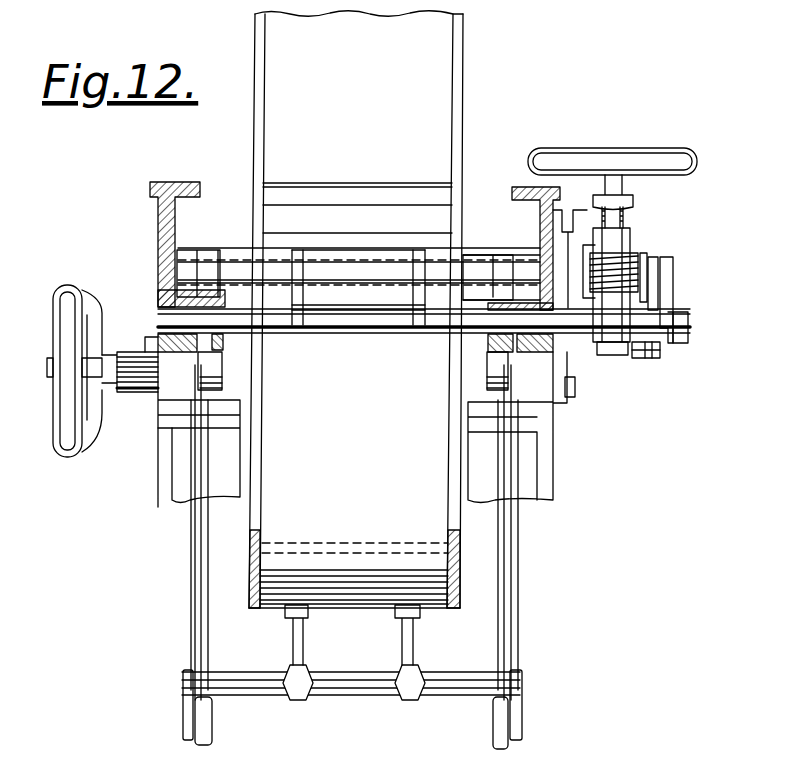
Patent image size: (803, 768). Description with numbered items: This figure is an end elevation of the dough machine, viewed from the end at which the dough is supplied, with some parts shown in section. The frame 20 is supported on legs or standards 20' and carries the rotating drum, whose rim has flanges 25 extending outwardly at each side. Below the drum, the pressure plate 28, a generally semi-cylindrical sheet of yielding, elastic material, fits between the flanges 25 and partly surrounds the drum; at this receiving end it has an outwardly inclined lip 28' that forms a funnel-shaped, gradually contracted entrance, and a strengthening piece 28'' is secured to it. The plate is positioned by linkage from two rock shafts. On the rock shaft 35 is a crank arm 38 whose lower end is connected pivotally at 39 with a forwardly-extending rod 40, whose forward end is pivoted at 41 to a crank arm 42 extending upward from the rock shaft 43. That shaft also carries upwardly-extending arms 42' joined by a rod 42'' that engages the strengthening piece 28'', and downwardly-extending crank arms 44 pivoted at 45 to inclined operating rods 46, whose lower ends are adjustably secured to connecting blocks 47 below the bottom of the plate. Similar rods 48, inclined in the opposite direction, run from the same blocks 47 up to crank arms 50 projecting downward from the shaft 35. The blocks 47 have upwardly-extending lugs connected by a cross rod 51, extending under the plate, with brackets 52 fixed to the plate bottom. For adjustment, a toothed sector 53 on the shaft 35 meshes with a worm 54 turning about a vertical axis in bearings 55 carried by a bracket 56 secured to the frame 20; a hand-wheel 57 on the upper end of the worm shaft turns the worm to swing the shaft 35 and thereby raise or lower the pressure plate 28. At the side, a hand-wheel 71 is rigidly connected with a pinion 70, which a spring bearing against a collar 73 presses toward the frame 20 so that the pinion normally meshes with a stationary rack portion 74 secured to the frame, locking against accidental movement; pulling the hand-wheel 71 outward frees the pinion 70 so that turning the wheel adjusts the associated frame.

The frame 20 is at (371, 344).
The legs or standards 20' is at (357, 455).
The flanges 25 is at (463, 113).
The pressure plate 28 is at (354, 506).
The lip 28' is at (357, 174).
The strengthening piece 28'' is at (357, 226).
The rock shaft 35 is at (480, 262).
The crank arm 38 is at (643, 358).
The pivotal connection 39 is at (660, 350).
The forwardly-extending rod 40 is at (655, 322).
The pivotal connection 41 is at (673, 270).
The crank arm 42 is at (684, 283).
The upwardly-extending arms 42' is at (358, 287).
The rod 42'' is at (359, 246).
The rock shaft 43 is at (366, 336).
The crank arms 44 is at (215, 362).
The pivotal connection 45 is at (222, 378).
The inclined operating rods 46 is at (203, 530).
The connecting blocks 47 is at (212, 720).
The rods 48 is at (190, 550).
The crank arms 50 is at (212, 296).
The cross rod 51 is at (343, 680).
The brackets 52 is at (303, 635).
The toothed sector 53 is at (640, 256).
The worm 54 is at (648, 262).
The bearings 55 is at (628, 230).
The bracket 56 is at (575, 397).
The hand-wheel 57 is at (690, 165).
The pinion 70 is at (125, 350).
The hand-wheel 71 is at (63, 328).
The collar 73 is at (47, 375).
The rack portion 74 is at (150, 335).